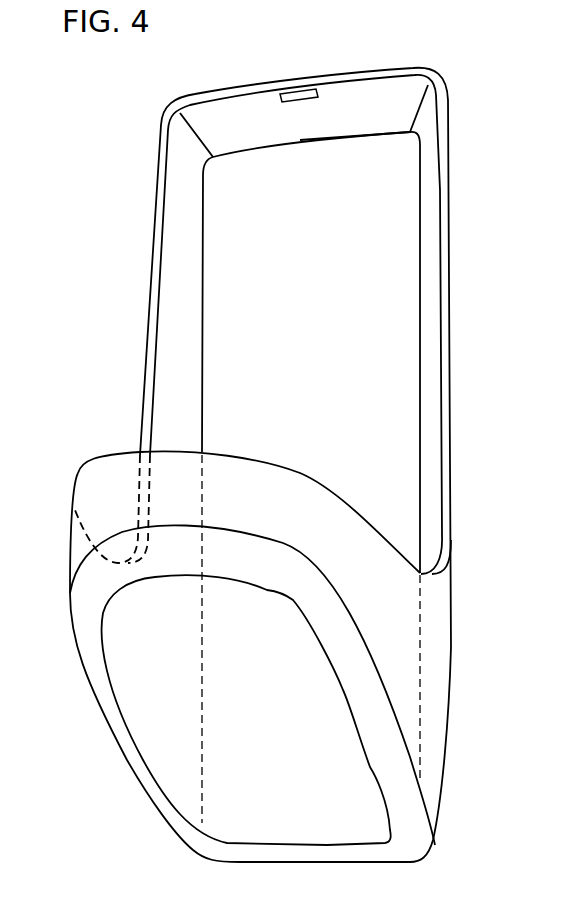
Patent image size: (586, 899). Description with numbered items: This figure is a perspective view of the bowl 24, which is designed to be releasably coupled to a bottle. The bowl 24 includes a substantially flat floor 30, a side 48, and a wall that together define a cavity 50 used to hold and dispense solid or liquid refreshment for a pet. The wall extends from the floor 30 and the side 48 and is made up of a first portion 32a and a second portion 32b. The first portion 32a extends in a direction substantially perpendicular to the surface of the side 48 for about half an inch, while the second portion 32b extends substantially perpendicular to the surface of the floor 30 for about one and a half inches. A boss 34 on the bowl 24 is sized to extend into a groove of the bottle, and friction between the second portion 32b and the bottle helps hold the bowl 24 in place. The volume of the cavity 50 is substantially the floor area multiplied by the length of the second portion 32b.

The bowl 24 is at (90, 290).
The floor 30 is at (363, 217).
The first portion 32a is at (297, 472).
The second portion 32b is at (163, 160).
The boss 34 is at (283, 93).
The side 48 is at (152, 665).
The cavity 50 is at (368, 318).